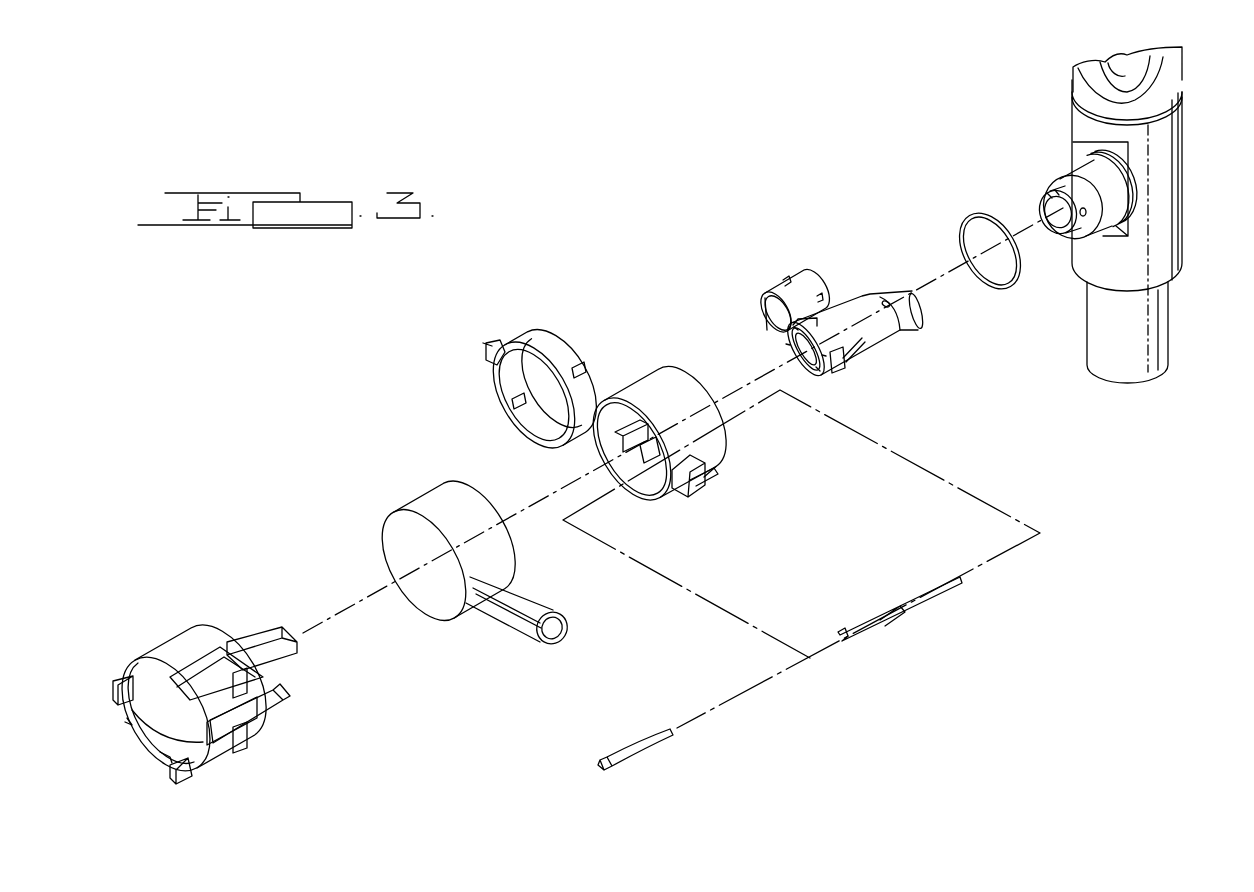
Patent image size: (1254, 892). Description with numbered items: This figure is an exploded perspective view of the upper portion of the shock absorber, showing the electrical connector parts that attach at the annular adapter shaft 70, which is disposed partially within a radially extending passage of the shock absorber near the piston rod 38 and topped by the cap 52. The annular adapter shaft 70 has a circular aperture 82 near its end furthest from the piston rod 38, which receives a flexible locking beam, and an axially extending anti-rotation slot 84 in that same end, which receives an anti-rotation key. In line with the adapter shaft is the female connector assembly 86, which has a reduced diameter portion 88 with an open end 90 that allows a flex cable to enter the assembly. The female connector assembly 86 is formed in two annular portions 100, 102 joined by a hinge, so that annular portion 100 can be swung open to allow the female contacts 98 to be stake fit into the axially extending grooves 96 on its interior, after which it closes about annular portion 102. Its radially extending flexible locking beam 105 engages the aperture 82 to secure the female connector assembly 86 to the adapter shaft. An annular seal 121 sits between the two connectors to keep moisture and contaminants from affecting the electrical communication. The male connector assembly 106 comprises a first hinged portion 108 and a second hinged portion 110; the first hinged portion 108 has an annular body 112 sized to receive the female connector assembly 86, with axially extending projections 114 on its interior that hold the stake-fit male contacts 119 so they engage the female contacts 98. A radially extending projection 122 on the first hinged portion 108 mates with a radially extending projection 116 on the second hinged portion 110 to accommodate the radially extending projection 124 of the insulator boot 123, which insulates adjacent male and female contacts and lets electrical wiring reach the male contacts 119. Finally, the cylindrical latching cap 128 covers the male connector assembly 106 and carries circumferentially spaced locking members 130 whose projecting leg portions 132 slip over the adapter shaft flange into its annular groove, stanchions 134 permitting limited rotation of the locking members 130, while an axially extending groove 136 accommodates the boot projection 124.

The piston rod 38 is at (1180, 263).
The cap 52 is at (1178, 66).
The annular adapter shaft 70 is at (1070, 188).
The axially extending anti-rotation slot 84 is at (1048, 200).
The circular aperture 82 is at (1086, 216).
The annular seal 121 is at (967, 225).
The annular portion 100 is at (822, 292).
The female connector assembly 86 is at (803, 272).
The reduced diameter portion 88 is at (767, 296).
The open end 90 is at (763, 318).
The annular portion 102 is at (857, 336).
The axially extending grooves 96 is at (805, 370).
The radially extending flexible locking beam 105 is at (860, 360).
The second hinged portion 110 is at (524, 370).
The radially extending projection 116 is at (495, 340).
The male connector assembly 106 is at (671, 427).
The axially extending projections 114 is at (610, 448).
The annular body 112 is at (730, 437).
The first hinged portion 108 is at (735, 460).
The radially extending projection 122 is at (705, 490).
The insulator boot 123 is at (427, 512).
The radially extending projection 124 is at (505, 630).
The latching cap 128 is at (212, 685).
The locking members 130 is at (120, 683).
The projecting leg portions 132 is at (300, 635).
The stanchions 134 is at (228, 652).
The axially extending groove 136 is at (175, 744).
The female contacts 98 is at (930, 608).
The male contacts 119 is at (665, 755).